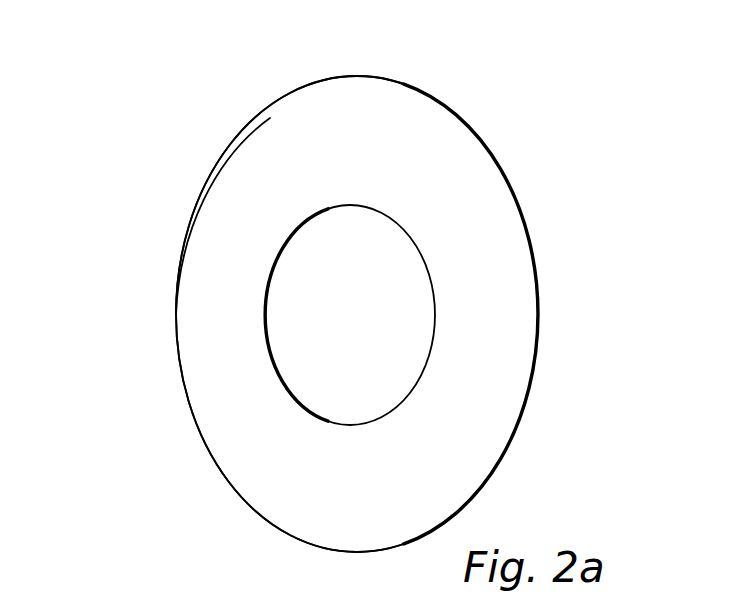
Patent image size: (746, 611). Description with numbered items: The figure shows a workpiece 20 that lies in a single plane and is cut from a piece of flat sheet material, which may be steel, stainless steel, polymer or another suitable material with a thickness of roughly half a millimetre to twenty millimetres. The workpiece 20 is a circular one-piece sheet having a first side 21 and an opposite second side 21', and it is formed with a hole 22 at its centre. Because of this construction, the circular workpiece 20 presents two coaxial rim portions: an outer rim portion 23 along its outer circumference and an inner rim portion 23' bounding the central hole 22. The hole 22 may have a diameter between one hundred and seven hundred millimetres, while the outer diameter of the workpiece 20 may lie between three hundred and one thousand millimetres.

The workpiece 20 is at (541, 73).
The first side 21 is at (357, 314).
The second side 21' is at (150, 216).
The hole 22 is at (366, 330).
The outer rim portion 23 is at (332, 306).
The inner rim portion 23' is at (348, 315).